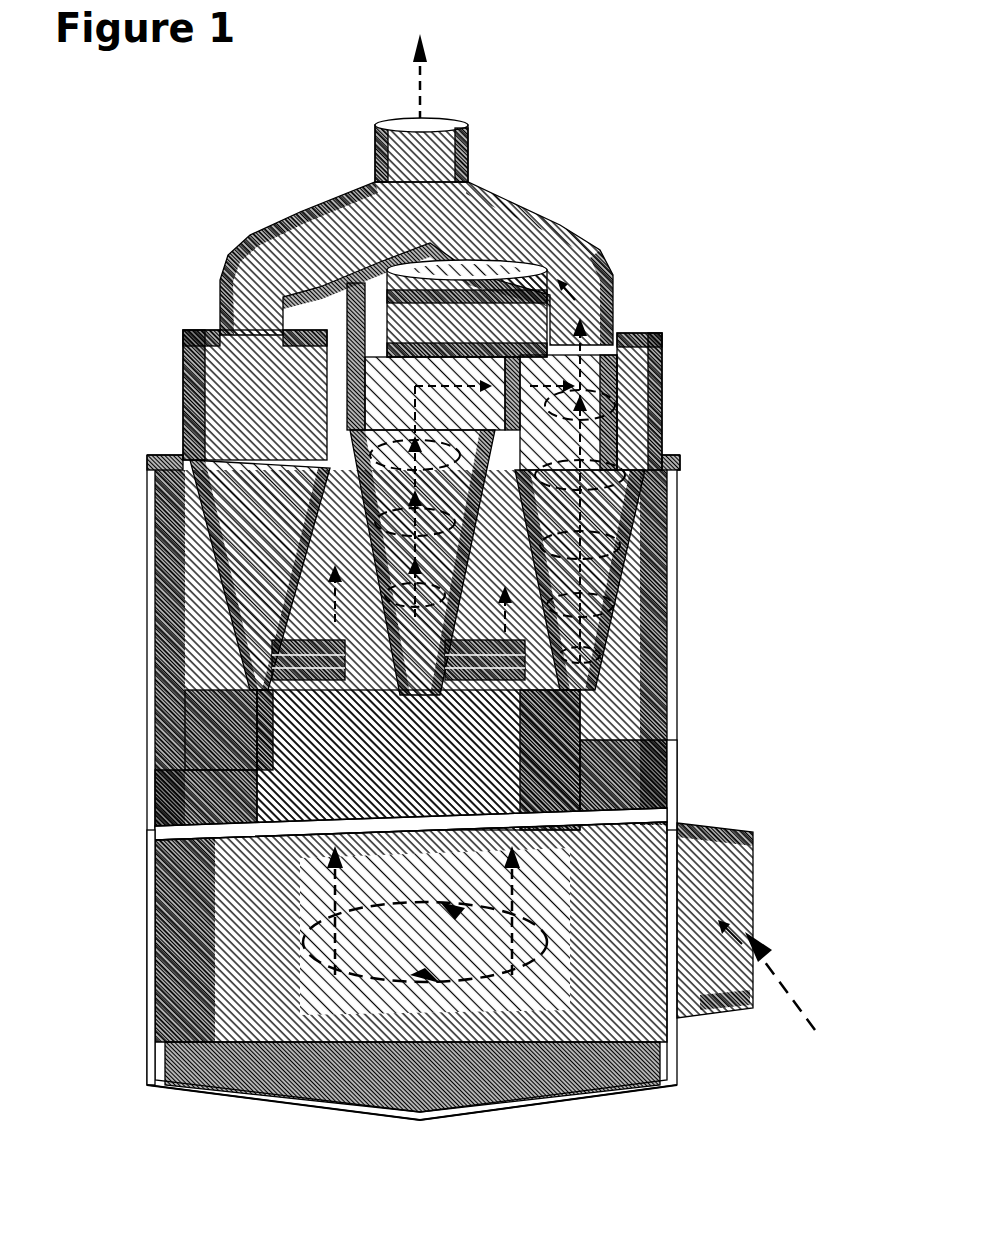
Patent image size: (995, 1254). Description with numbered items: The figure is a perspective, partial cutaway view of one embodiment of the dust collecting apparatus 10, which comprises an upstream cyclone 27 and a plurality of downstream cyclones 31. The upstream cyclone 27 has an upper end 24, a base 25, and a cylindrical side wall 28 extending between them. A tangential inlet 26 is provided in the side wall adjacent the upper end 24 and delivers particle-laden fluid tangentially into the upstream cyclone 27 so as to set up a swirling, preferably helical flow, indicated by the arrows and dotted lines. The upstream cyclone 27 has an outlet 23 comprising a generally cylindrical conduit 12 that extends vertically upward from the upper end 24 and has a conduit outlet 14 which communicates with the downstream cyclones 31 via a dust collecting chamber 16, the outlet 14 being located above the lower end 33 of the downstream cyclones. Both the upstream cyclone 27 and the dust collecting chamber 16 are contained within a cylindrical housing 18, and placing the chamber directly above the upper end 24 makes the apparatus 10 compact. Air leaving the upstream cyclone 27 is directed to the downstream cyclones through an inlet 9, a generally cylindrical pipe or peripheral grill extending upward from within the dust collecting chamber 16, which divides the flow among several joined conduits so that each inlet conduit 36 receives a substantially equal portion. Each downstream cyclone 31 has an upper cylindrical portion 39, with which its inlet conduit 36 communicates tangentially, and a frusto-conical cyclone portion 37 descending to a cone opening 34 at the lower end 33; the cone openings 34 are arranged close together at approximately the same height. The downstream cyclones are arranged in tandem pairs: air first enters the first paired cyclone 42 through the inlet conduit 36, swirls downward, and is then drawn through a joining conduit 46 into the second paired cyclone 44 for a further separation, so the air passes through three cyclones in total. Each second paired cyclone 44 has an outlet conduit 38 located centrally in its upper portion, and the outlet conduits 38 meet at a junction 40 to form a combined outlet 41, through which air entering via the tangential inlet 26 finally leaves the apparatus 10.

The inlet 9 is at (322, 530).
The dust collecting apparatus 10 is at (110, 318).
The conduit 12 is at (343, 760).
The conduit outlet 14 is at (273, 640).
The dust collecting chamber 16 is at (207, 707).
The cylindrical housing 18 is at (672, 546).
The outlet 23 is at (348, 788).
The upper end 24 is at (145, 843).
The base 25 is at (540, 1108).
The tangential inlet 26 is at (733, 902).
The upstream cyclone 27 is at (248, 928).
The side wall 28 is at (148, 1000).
The downstream cyclones 31 is at (652, 355).
The lower end 33 is at (598, 703).
The cone opening 34 is at (670, 752).
The inlet conduit 36 is at (378, 464).
The frusto-conical cyclone portion 37 is at (160, 521).
The outlet conduit 38 is at (332, 232).
The upper cylindrical portion 39 is at (185, 410).
The junction 40 is at (377, 172).
The combined outlet 41 is at (458, 147).
The first paired cyclone 42 is at (347, 363).
The second paired cyclone 44 is at (655, 387).
The joining conduit 46 is at (455, 360).